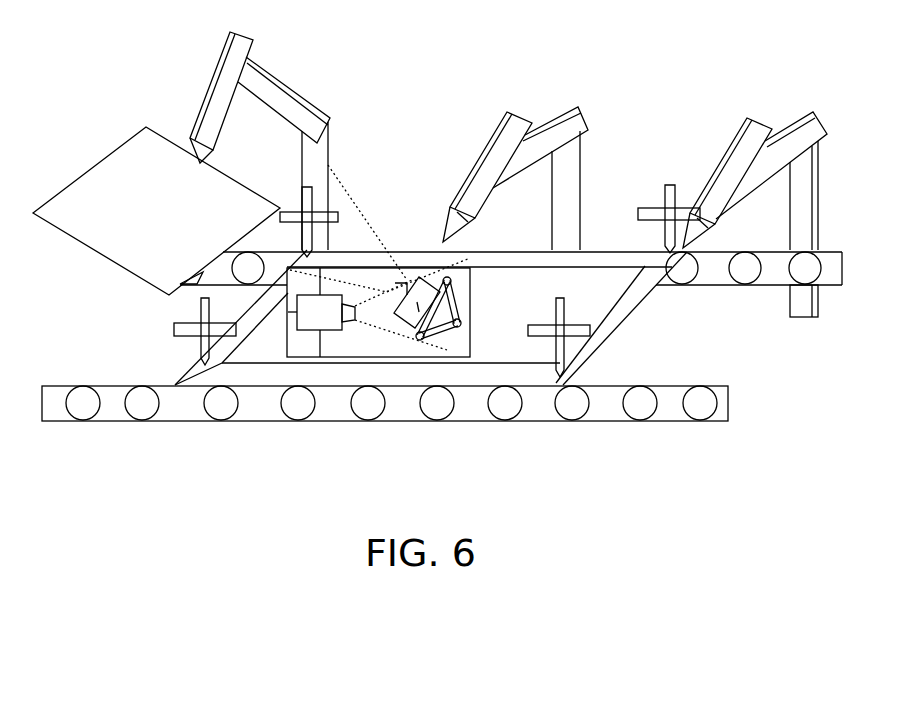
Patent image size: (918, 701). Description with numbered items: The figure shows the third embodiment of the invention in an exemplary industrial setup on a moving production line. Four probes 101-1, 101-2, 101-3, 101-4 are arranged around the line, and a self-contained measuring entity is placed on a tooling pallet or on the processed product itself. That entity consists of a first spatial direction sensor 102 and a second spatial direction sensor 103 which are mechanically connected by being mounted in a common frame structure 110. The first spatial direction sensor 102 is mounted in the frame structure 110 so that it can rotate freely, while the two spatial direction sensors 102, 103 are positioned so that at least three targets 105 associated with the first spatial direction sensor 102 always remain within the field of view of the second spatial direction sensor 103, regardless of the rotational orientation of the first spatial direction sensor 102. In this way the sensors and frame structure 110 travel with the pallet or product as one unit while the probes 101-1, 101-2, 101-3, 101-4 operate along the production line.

The probe 101-1 is at (175, 328).
The probe 101-2 is at (590, 328).
The probe 101-3 is at (667, 184).
The probe 101-4 is at (322, 210).
The first spatial direction sensor 102 is at (420, 340).
The second spatial direction sensor 103 is at (297, 332).
The targets 105 is at (449, 286).
The frame structure 110 is at (470, 290).